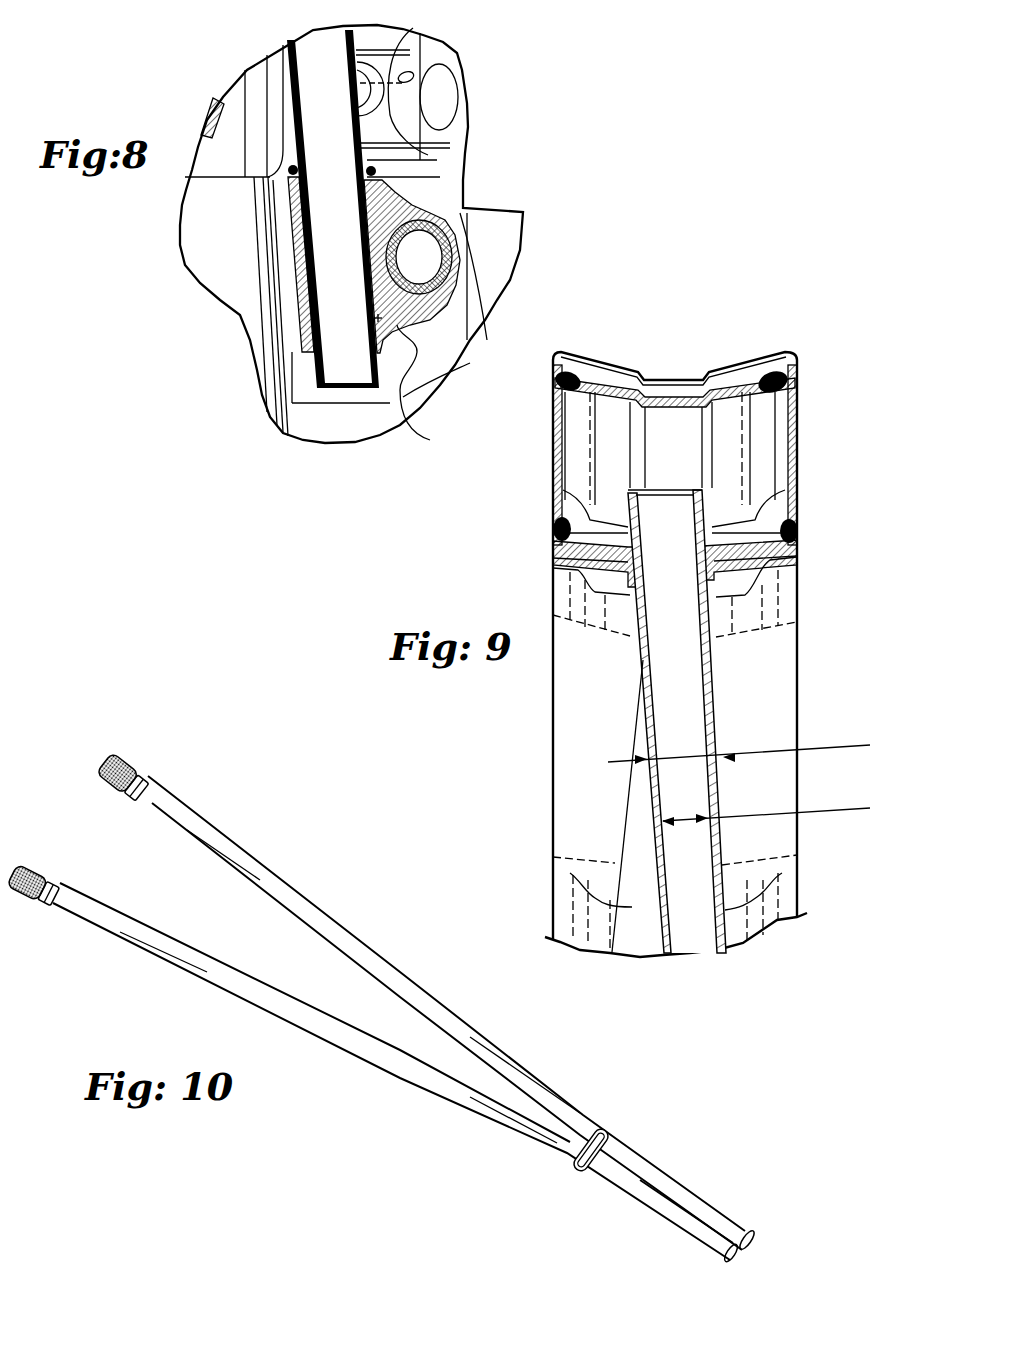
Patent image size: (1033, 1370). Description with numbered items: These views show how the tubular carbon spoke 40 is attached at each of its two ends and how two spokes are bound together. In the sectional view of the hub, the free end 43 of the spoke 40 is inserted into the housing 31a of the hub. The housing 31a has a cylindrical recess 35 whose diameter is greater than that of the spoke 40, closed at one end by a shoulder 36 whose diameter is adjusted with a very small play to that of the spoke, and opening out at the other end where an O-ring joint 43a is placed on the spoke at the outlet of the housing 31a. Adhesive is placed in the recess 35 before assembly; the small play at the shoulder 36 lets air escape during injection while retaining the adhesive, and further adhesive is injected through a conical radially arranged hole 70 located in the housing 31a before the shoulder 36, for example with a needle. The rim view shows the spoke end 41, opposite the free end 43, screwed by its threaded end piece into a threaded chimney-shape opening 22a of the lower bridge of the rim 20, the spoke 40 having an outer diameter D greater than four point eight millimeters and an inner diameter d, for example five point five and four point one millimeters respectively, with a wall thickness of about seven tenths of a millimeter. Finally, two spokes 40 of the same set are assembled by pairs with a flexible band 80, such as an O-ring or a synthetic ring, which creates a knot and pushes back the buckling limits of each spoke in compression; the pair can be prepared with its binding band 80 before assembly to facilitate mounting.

In FIG. 9, the rim 20 is at (806, 382).
In FIG. 9, the threaded chimney-shape opening 22a is at (707, 538).
In FIG. 8, the housing 31a is at (302, 263).
In FIG. 8, the cylindrical recess 35 is at (309, 217).
In FIG. 8, the shoulder 36 is at (307, 350).
In FIG. 9, the spoke 40 is at (712, 720).
In FIG. 10, the spoke 40 is at (371, 955).
In FIG. 9, the spoke end 41 is at (700, 593).
In FIG. 8, the spoke end 43 is at (385, 194).
In FIG. 8, the O-ring joint 43a is at (374, 170).
In FIG. 8, the hole 70 is at (430, 391).
In FIG. 10, the flexible band 80 is at (577, 1167).
In FIG. 9, the outer diameter D is at (739, 737).
In FIG. 9, the inner diameter d is at (766, 798).